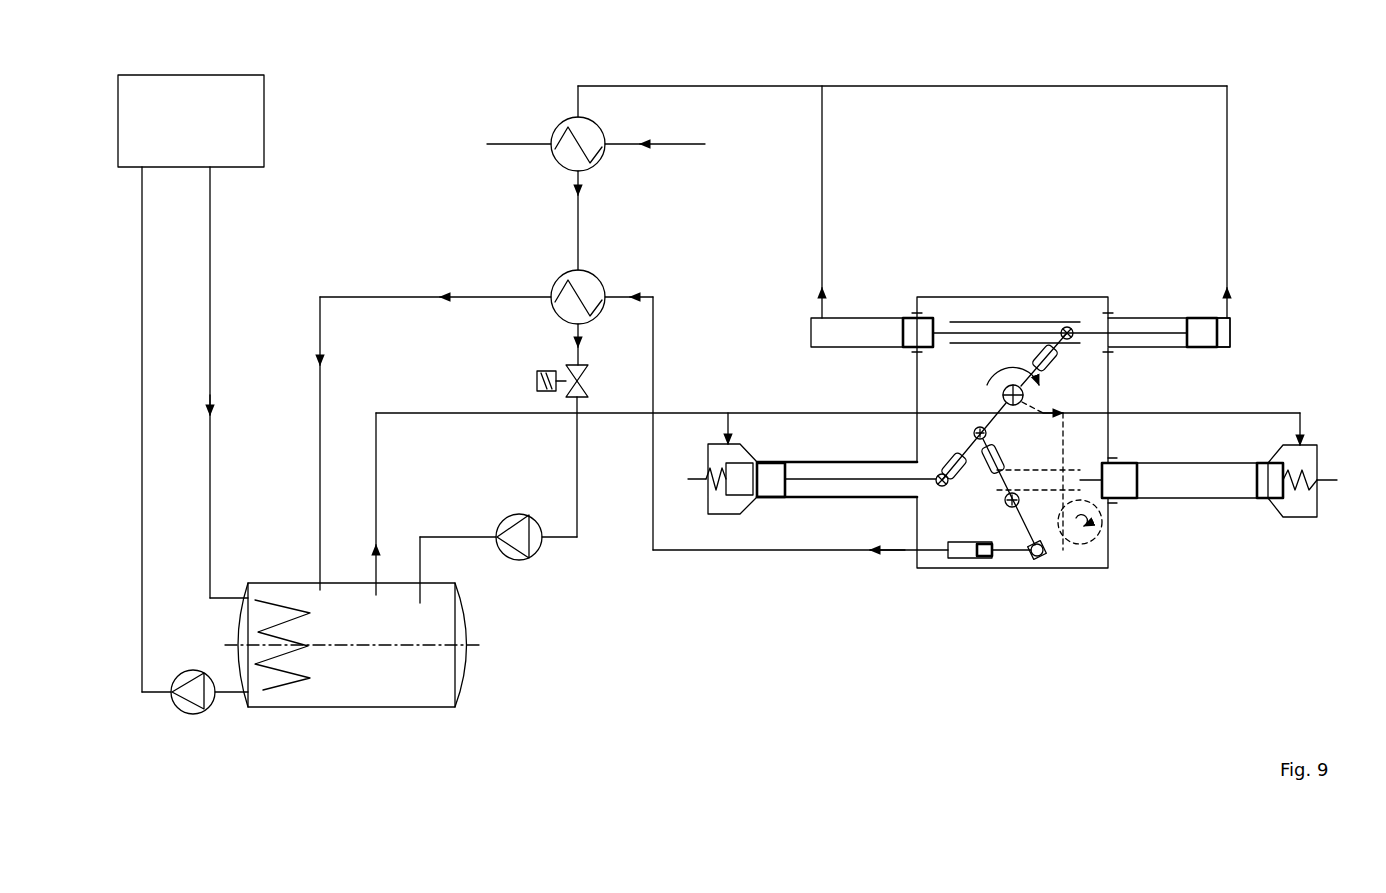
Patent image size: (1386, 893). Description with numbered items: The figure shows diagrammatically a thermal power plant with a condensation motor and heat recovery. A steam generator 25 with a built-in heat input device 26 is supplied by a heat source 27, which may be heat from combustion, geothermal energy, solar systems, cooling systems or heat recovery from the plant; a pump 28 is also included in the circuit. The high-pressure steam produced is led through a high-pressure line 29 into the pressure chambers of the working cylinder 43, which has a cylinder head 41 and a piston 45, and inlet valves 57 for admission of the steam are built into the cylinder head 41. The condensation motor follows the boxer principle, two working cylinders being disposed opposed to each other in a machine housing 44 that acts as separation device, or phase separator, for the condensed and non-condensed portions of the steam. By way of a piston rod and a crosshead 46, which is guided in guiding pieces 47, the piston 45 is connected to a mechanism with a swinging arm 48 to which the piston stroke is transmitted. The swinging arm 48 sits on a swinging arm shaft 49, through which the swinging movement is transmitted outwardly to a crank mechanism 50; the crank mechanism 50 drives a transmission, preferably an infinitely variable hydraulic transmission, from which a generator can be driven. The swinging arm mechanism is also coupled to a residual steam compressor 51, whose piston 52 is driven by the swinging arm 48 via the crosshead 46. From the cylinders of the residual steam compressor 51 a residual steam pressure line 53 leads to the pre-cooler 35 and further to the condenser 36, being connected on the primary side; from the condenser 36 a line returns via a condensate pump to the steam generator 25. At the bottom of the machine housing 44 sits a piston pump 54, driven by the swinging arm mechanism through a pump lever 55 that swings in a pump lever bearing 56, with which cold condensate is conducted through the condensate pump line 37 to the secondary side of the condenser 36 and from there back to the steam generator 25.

The steam generator 25 is at (387, 695).
The heat input device 26 is at (272, 682).
The heat source 27 is at (225, 117).
The pump 28 is at (192, 700).
The high-pressure line 29 is at (457, 413).
The pre-cooler 35 is at (552, 142).
The condenser 36 is at (552, 283).
The condensate pump 37 is at (530, 565).
The cylinder head 41 is at (722, 505).
The working cylinder 43 is at (843, 488).
The machine housing 44 is at (935, 385).
The piston 45 is at (1065, 325).
The crosshead 46 is at (992, 322).
The guiding piece 47 is at (978, 440).
The swinging arm 48 is at (997, 419).
The swinging arm shaft 49 is at (1022, 392).
The crank mechanism 50 is at (1070, 460).
The residual steam compressor 51 is at (1225, 333).
The piston 52 is at (1200, 330).
The residual steam pressure line 53 is at (1225, 228).
The piston pump 54 is at (960, 552).
The pump lever 55 is at (1018, 507).
The pump lever bearing 56 is at (1067, 528).
The inlet valve 57 is at (738, 486).